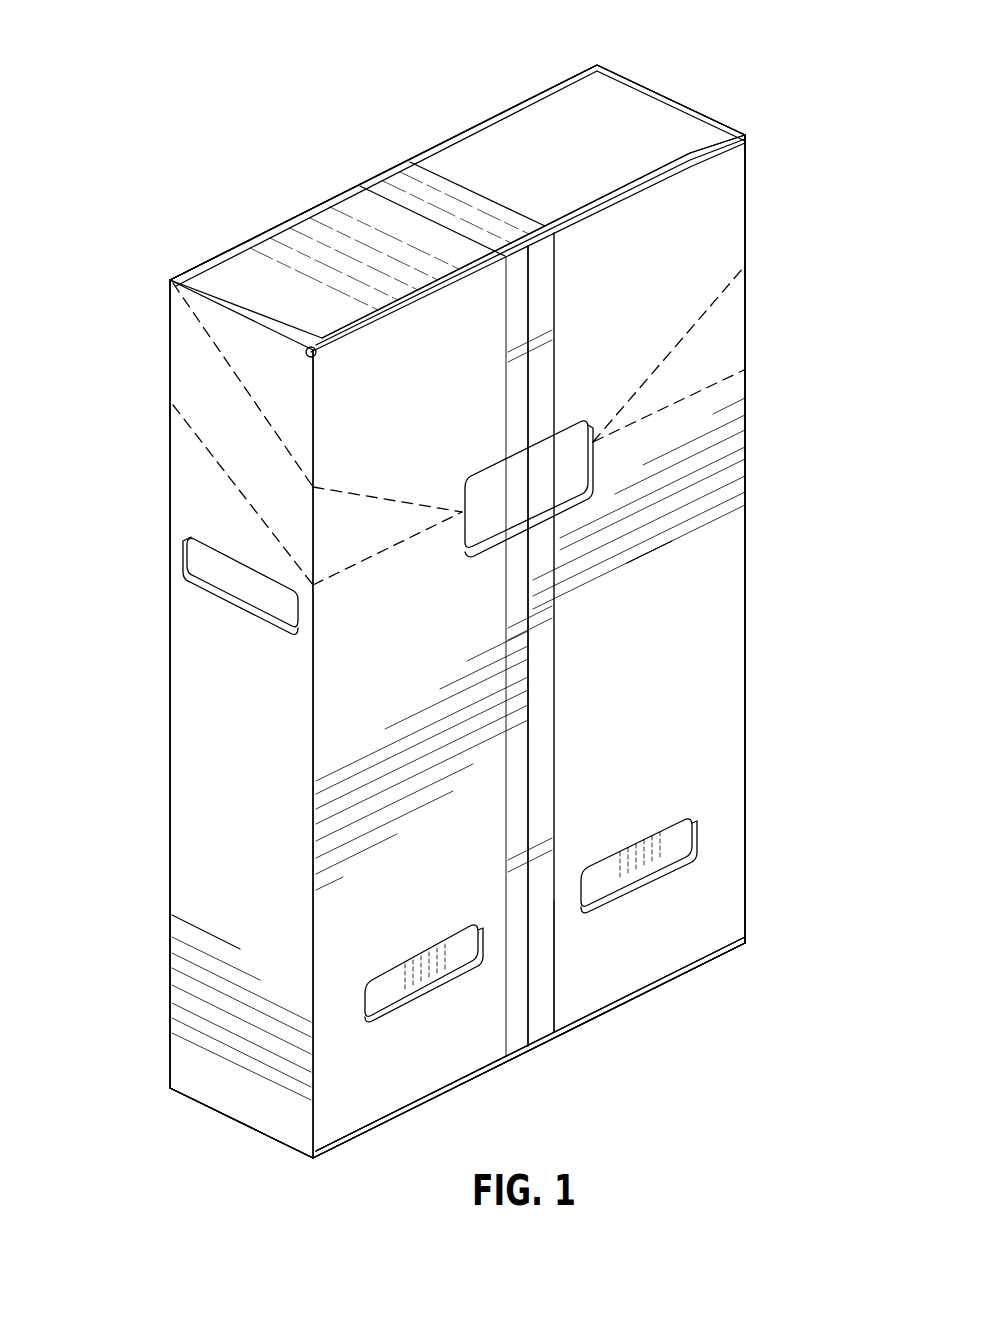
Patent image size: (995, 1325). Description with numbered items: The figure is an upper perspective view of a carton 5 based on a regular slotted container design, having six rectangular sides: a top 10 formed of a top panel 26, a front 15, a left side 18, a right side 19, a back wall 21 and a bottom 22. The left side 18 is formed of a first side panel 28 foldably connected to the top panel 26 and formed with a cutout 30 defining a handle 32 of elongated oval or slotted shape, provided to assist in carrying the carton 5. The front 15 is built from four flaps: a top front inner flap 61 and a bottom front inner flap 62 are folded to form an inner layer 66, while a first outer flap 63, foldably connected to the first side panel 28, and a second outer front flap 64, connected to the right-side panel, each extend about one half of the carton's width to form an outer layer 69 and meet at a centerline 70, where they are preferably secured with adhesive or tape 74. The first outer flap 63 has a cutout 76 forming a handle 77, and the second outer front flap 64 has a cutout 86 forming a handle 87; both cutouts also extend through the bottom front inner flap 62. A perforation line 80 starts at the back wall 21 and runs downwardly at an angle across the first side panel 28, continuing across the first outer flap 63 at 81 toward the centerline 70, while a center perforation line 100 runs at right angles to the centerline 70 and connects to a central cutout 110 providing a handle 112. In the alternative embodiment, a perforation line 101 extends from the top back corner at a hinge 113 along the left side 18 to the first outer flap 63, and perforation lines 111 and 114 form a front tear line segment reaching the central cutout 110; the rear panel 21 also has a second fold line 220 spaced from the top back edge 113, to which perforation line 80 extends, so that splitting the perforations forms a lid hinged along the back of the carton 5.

The carton 5 is at (743, 80).
The top 10 is at (403, 202).
The top panel 26 is at (541, 150).
The top front inner flap 61 is at (306, 349).
The perforation line 114 is at (397, 497).
The hinge 113 is at (171, 280).
The perforation line 101 is at (213, 352).
The back wall 21 is at (170, 372).
The perforation line 80 is at (170, 387).
The second fold line 220 is at (192, 433).
The cutout 30 is at (213, 543).
The handle 32 is at (192, 575).
The left side 18 is at (240, 713).
The first side panel 28 is at (210, 917).
The perforation line 81 is at (360, 565).
The central cutout 110 is at (593, 477).
The handle 112 is at (567, 513).
The perforation line 111 is at (698, 322).
The center perforation line 100 is at (702, 392).
The right side 19 is at (746, 477).
The front 15 is at (671, 676).
The outer layer 69 is at (657, 755).
The cutout 86 is at (688, 812).
The handle 87 is at (695, 843).
The inner layer 66 is at (667, 877).
The bottom 22 is at (712, 958).
The adhesive or tape 74 is at (553, 928).
The second outer front flap 64 is at (593, 973).
The centerline 70 is at (530, 1030).
The first outer flap 63 is at (400, 1075).
The cutout 76 is at (363, 1006).
The bottom front inner flap 62 is at (366, 1012).
The handle 77 is at (383, 963).